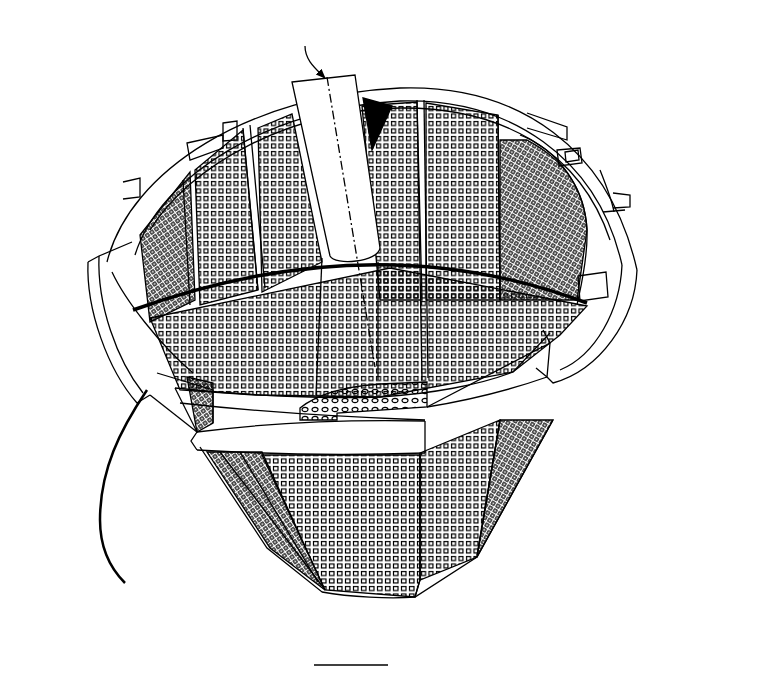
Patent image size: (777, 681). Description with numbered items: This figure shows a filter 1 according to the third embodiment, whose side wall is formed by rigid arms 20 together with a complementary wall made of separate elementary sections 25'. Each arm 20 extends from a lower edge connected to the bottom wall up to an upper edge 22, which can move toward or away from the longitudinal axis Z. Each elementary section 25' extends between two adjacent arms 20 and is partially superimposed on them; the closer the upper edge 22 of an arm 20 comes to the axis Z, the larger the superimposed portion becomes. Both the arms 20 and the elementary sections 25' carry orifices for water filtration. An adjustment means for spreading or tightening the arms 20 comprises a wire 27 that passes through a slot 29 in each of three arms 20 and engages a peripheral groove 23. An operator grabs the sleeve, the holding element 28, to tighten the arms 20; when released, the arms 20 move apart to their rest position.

The filter 1 is at (124, 70).
The rigid arm 20 is at (567, 137).
The upper edge 22 is at (606, 183).
The peripheral groove 23 is at (604, 213).
The elementary section 25' is at (403, 341).
The wire 27 is at (137, 233).
The holding element 28 is at (353, 92).
The slot 29 is at (527, 122).